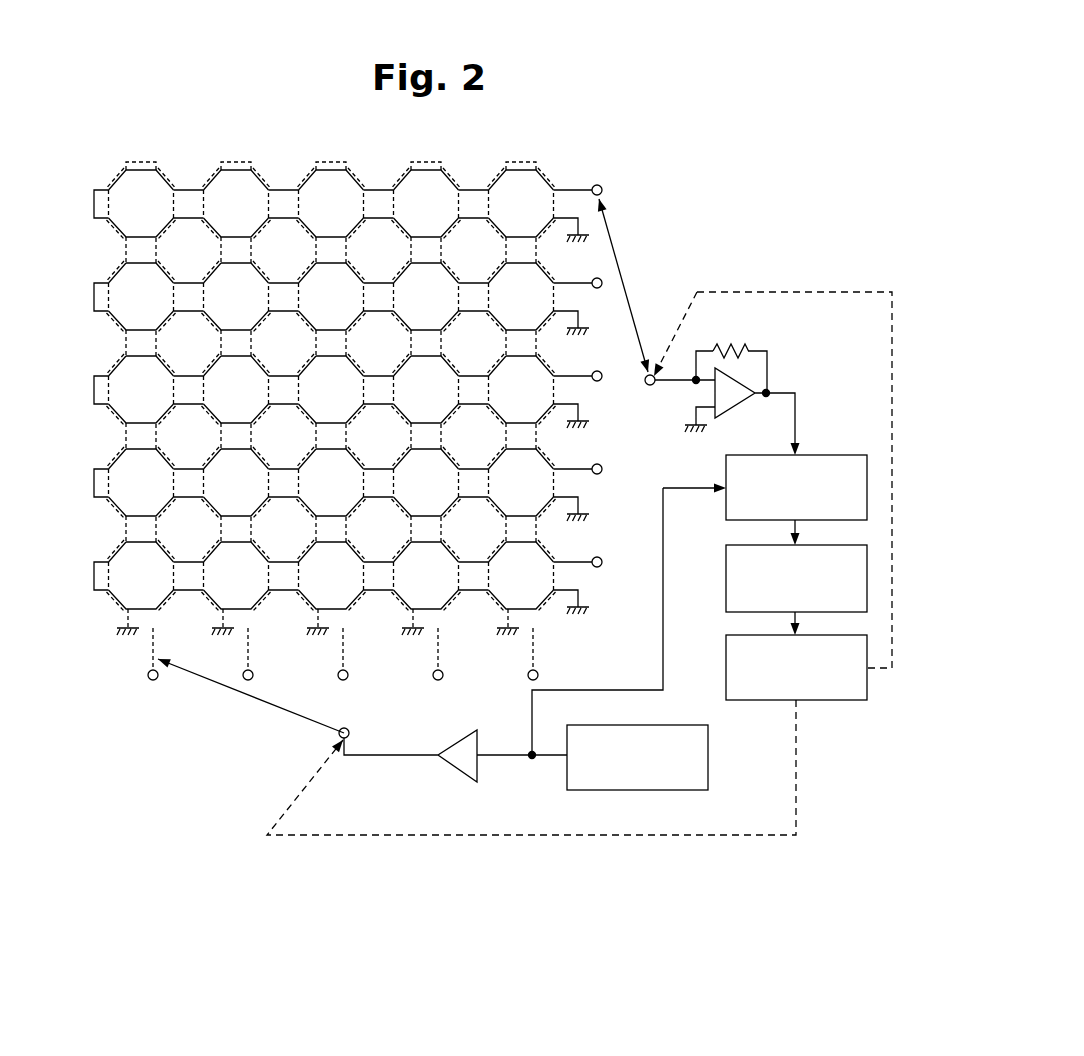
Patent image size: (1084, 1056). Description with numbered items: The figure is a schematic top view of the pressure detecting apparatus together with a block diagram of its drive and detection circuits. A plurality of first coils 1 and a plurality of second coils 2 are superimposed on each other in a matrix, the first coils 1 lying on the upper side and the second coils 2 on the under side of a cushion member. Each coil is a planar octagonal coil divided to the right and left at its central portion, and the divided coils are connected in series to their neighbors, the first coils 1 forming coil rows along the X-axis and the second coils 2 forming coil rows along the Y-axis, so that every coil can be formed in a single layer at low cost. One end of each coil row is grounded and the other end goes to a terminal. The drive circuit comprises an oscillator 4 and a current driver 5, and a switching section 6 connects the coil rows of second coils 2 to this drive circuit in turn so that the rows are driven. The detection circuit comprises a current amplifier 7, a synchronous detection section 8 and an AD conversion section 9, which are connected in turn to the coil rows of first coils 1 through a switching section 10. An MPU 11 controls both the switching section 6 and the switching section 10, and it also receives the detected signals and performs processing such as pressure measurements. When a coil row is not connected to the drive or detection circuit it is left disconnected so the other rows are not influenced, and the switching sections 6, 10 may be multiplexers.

The first coil 1 is at (118, 180).
The second coil 2 is at (138, 160).
The oscillator 4 is at (708, 752).
The current driver 5 is at (460, 772).
The switching section 6 is at (272, 705).
The current amplifier 7 is at (776, 362).
The synchronous detection section 8 is at (726, 512).
The AD conversion section 9 is at (726, 585).
The switching section 10 is at (620, 266).
The MPU 11 is at (838, 700).